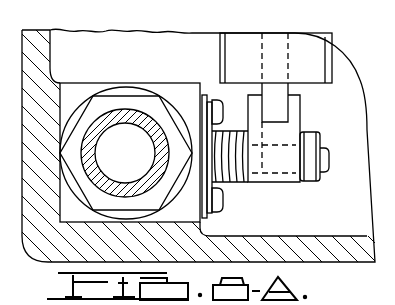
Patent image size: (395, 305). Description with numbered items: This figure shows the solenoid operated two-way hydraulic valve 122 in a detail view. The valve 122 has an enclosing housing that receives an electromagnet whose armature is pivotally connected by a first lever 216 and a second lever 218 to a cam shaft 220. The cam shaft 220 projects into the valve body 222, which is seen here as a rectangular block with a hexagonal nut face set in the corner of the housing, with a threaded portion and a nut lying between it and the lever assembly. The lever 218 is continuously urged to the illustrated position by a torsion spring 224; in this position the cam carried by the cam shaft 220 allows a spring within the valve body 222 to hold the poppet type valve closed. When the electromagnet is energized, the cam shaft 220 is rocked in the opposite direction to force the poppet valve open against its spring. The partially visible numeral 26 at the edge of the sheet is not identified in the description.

The two-way hydraulic valve 122 is at (340, 257).
The valve body 222 is at (178, 70).
The lever 216 is at (282, 93).
The lever 218 is at (280, 130).
The torsion spring 224 is at (230, 183).
The cam shaft 220 is at (323, 165).
The housing wall 26 is at (390, 145).